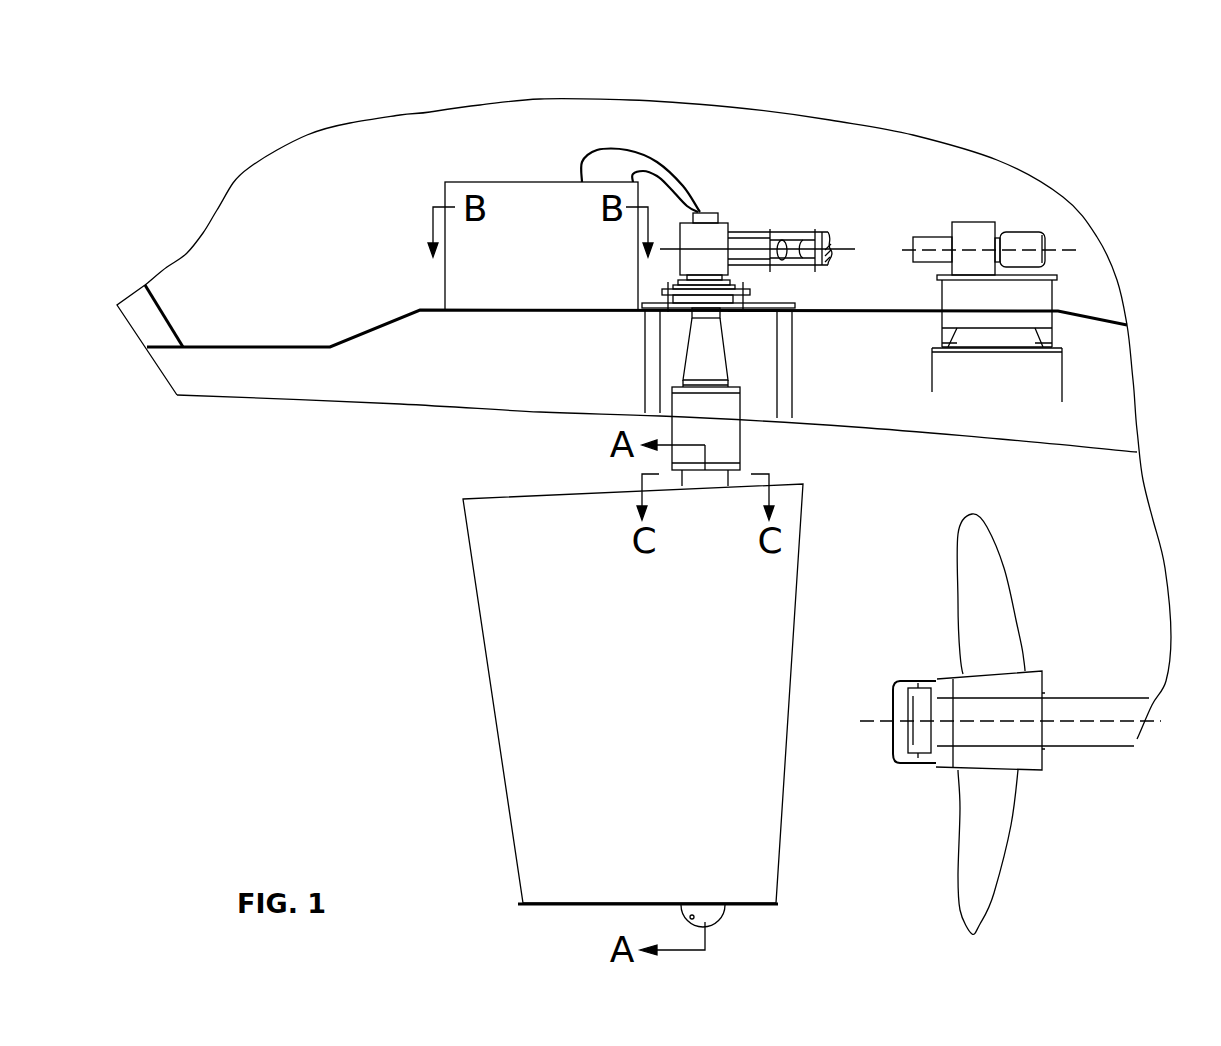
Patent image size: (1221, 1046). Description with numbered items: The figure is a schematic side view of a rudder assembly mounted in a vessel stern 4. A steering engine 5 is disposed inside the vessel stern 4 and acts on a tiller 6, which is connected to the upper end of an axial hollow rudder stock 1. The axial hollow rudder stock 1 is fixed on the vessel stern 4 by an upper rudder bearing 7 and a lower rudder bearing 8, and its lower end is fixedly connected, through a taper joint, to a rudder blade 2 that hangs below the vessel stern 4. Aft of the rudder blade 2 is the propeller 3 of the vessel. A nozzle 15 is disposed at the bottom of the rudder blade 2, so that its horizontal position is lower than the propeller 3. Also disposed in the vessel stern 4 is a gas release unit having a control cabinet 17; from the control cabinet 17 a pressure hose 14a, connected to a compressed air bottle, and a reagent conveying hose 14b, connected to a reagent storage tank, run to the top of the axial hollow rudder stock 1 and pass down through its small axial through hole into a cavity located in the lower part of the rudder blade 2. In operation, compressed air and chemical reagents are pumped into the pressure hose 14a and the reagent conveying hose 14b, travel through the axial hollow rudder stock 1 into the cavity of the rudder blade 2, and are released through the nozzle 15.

The axial hollow rudder stock 1 is at (718, 476).
The rudder blade 2 is at (747, 823).
The propeller 3 is at (966, 722).
The vessel stern 4 is at (285, 308).
The steering engine 5 is at (1020, 257).
The tiller 6 is at (745, 250).
The upper rudder bearing 7 is at (712, 297).
The lower rudder bearing 8 is at (713, 425).
The pressure hose 14a is at (680, 185).
The reagent conveying hose 14b is at (633, 152).
The nozzle 15 is at (716, 918).
The control cabinet 17 is at (518, 252).